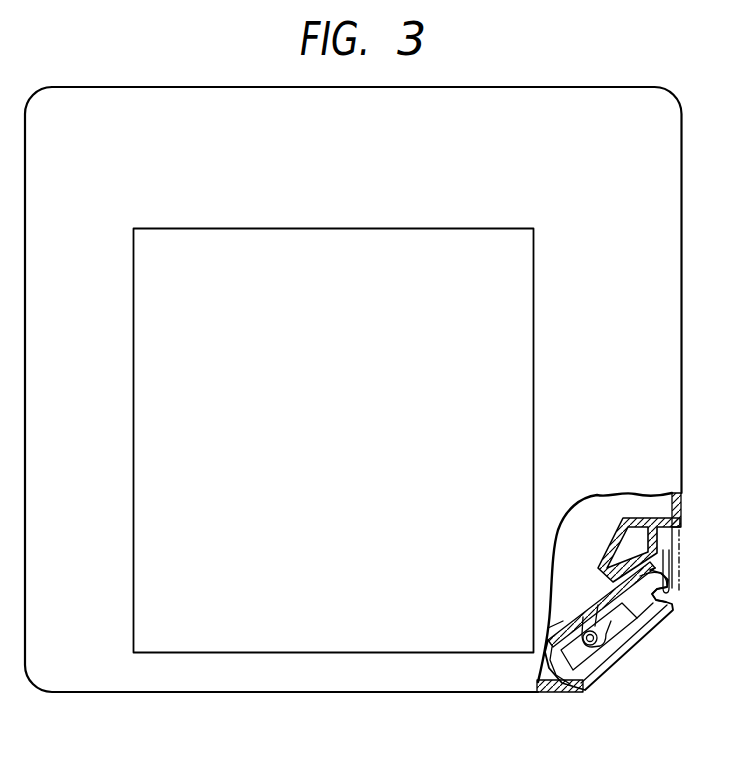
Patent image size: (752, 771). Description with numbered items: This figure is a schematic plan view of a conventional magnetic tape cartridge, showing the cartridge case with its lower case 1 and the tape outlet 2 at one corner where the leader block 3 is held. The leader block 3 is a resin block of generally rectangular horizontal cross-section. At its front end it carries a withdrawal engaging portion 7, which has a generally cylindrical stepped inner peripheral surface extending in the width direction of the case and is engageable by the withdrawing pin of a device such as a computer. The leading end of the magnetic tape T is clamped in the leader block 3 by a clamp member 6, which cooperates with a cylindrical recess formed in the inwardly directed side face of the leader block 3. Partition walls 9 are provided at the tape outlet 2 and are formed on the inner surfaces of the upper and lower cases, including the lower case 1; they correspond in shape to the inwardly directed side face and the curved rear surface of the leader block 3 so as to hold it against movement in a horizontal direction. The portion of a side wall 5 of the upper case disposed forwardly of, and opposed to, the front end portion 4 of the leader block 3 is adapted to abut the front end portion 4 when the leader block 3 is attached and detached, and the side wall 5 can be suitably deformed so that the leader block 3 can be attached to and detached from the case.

The lower case 1 is at (690, 117).
The tape outlet 2 is at (632, 662).
The leader block 3 is at (649, 617).
The front end portion 4 is at (672, 585).
The side wall 5 is at (682, 591).
The clamp member 6 is at (587, 631).
The withdrawal engaging portion 7 is at (660, 603).
The partition walls 9 is at (545, 633).
The magnetic tape T is at (548, 628).